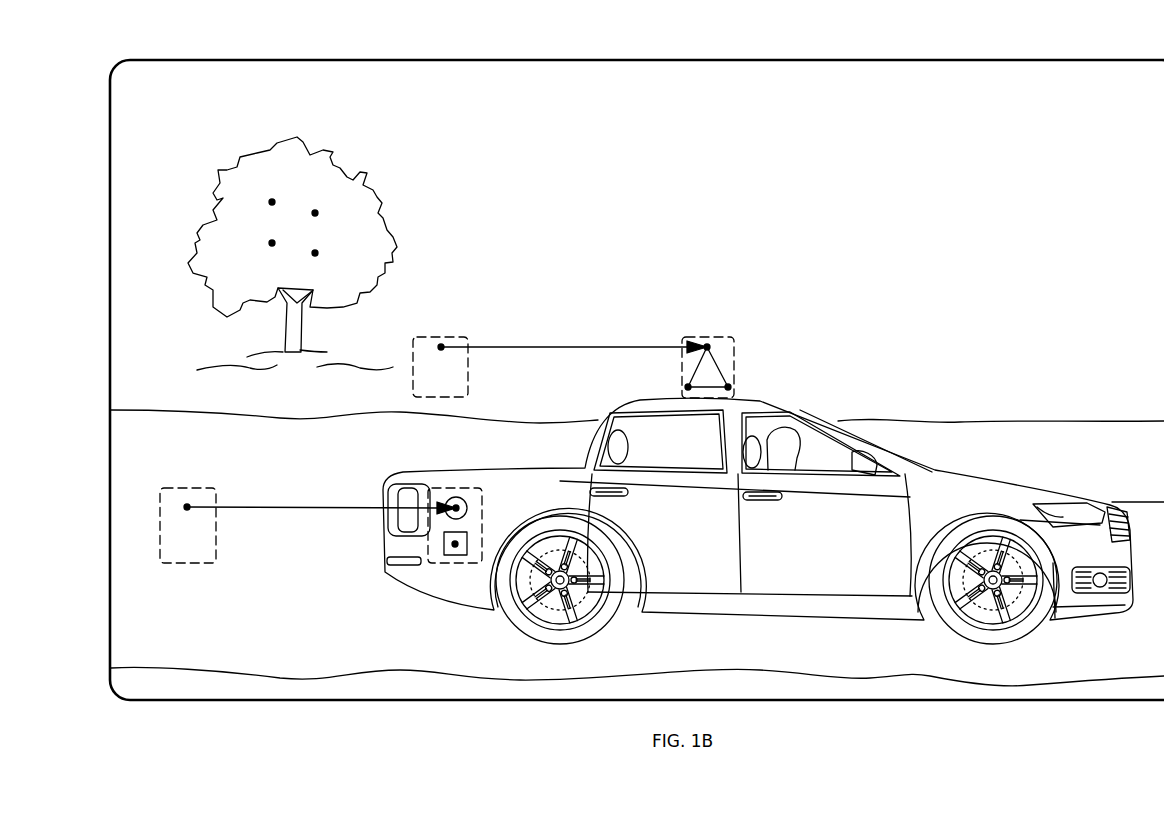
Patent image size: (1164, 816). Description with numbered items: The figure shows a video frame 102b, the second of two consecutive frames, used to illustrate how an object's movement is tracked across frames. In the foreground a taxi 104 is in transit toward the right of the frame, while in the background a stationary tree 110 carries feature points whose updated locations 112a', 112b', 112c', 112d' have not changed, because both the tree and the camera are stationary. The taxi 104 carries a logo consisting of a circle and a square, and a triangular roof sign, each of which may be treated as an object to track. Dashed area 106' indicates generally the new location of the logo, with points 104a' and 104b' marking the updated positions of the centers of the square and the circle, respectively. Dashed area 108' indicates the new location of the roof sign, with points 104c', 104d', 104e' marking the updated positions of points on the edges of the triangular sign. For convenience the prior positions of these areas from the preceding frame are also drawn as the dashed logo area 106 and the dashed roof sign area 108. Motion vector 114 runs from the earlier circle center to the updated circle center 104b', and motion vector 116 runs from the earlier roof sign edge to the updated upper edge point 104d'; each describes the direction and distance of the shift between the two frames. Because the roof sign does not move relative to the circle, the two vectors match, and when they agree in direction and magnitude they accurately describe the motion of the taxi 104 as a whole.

The frame 102b is at (642, 60).
The tree 110 is at (298, 142).
The updated location of feature 112a 112a' is at (212, 188).
The updated location of feature 112b 112b' is at (382, 204).
The updated location of feature 112c 112c' is at (206, 244).
The updated location of feature 112d 112d' is at (388, 256).
The area denoting roof sign 108 is at (440, 346).
The motion vector 116 is at (557, 347).
The new location of roof sign area 108' is at (708, 347).
The updated position of roof sign edge point 104d' is at (752, 339).
The updated position of roof sign edge point 104e' is at (652, 379).
The updated position of roof sign edge point 104c' is at (763, 387).
The area denoting logo 106 is at (188, 505).
The motion vector 114 is at (255, 507).
The new location of logo area 106' is at (455, 496).
The updated position of circle center 104b' is at (393, 482).
The updated position of square center 104a' is at (384, 543).
The taxi 104 is at (991, 474).